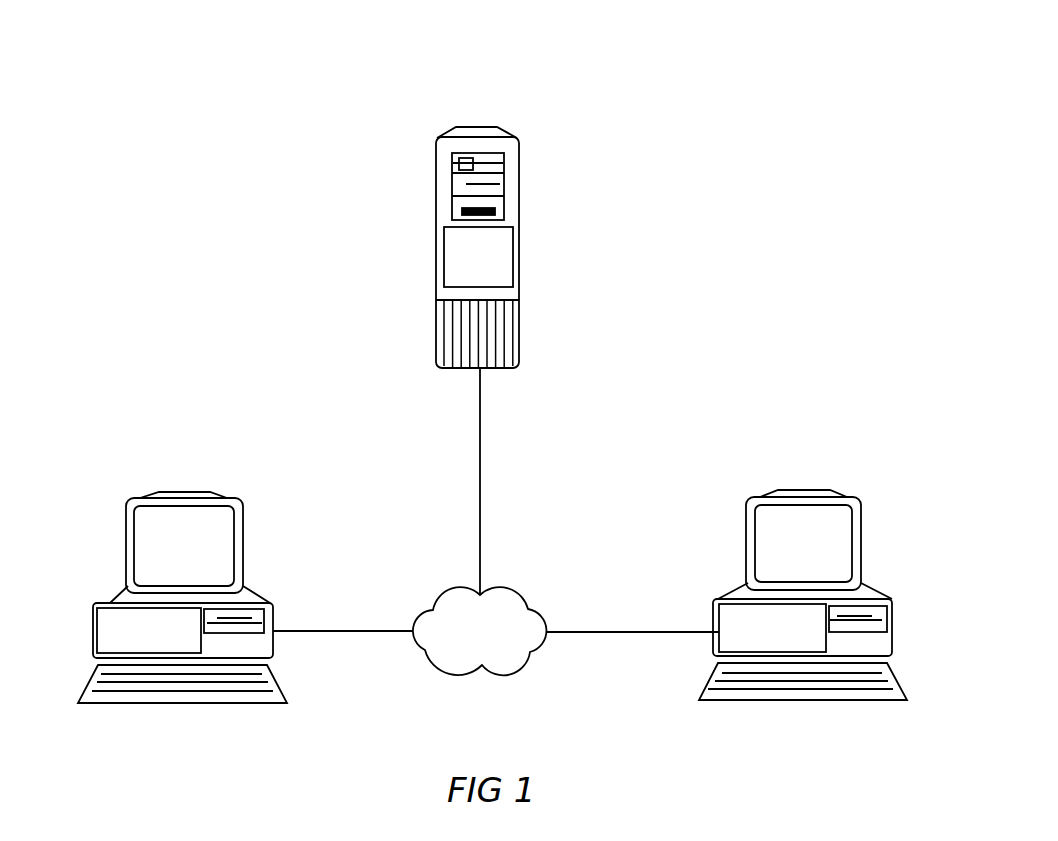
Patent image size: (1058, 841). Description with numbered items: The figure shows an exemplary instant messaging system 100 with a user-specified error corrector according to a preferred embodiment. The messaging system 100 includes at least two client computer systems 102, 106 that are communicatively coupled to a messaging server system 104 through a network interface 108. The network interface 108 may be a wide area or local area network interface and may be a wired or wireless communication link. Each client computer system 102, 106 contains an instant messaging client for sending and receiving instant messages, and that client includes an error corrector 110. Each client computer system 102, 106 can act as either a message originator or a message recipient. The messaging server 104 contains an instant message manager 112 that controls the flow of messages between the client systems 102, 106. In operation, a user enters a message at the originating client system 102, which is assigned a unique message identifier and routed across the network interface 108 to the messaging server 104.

The messaging system 100 is at (843, 44).
The client computer system 102 is at (243, 547).
The messaging server system 104 is at (485, 247).
The client computer system 106 is at (861, 543).
The network interface 108 is at (533, 608).
The error corrector 110 is at (97, 617).
The instant message manager 112 is at (444, 255).